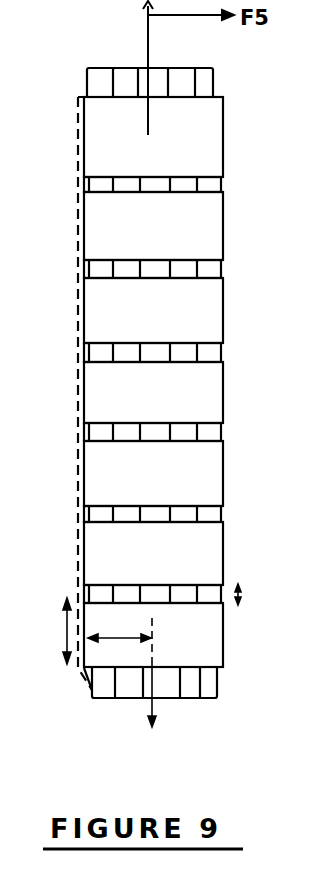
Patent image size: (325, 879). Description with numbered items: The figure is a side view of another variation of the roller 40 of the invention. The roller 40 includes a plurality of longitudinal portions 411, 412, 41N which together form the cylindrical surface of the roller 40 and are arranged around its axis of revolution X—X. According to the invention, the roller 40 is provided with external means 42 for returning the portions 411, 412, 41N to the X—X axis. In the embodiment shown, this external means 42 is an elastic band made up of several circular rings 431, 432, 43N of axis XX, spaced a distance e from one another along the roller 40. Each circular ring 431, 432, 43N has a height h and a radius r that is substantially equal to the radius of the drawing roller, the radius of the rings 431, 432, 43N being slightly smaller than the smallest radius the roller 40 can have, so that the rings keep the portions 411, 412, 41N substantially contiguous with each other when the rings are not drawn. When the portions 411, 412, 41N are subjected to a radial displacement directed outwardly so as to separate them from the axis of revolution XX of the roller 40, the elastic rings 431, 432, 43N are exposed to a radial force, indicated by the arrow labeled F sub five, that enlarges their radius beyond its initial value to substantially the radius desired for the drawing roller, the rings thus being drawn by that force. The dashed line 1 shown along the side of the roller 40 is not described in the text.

The roller 40 is at (165, 416).
The circular ring 43N is at (199, 151).
The circular ring 432 is at (203, 555).
The circular ring 431 is at (203, 639).
The external means for returning the portions 42 is at (222, 258).
The longitudinal portion 411 is at (90, 76).
The longitudinal portion 412 is at (122, 80).
The longitudinal portion 41N is at (200, 78).
The wall / support line 1 is at (77, 383).